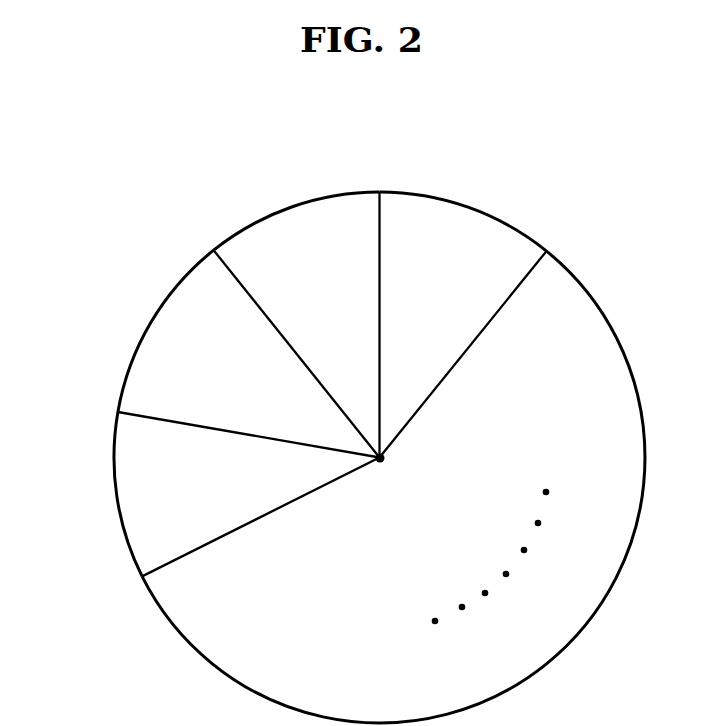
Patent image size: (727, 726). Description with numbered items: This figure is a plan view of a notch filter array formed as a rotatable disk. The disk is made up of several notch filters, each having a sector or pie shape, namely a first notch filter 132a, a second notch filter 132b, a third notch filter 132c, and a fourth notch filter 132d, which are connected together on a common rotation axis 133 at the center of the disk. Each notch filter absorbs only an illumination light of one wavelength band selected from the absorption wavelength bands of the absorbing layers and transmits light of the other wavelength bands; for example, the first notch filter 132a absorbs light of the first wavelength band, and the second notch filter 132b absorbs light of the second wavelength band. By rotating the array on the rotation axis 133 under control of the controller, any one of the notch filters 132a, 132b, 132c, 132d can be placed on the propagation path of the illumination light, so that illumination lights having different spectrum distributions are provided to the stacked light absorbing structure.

The first notch filter 132a is at (127, 498).
The second notch filter 132b is at (163, 332).
The third notch filter 132c is at (288, 220).
The fourth notch filter 132d is at (459, 214).
The rotation axis 133 is at (382, 461).